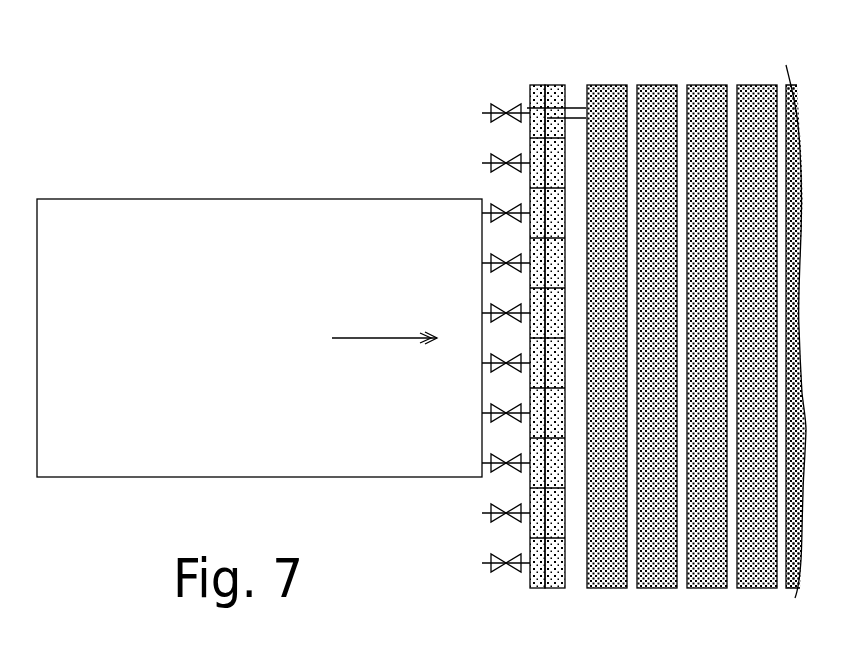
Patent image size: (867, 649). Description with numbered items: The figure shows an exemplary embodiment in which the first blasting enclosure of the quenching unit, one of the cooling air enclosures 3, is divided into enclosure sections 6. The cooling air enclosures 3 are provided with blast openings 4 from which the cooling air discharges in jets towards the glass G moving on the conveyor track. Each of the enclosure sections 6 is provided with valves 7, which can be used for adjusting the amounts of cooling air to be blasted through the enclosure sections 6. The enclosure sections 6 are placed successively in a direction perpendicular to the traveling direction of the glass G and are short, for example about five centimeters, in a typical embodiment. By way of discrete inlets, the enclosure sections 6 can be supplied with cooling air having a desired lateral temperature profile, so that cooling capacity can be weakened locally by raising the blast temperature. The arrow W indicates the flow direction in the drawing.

The cooling air enclosure 3 is at (640, 85).
The blast openings 4 is at (545, 112).
The enclosure sections 6 is at (528, 126).
The valves 7 is at (510, 107).
The glass G is at (293, 199).
The flow direction W is at (384, 322).